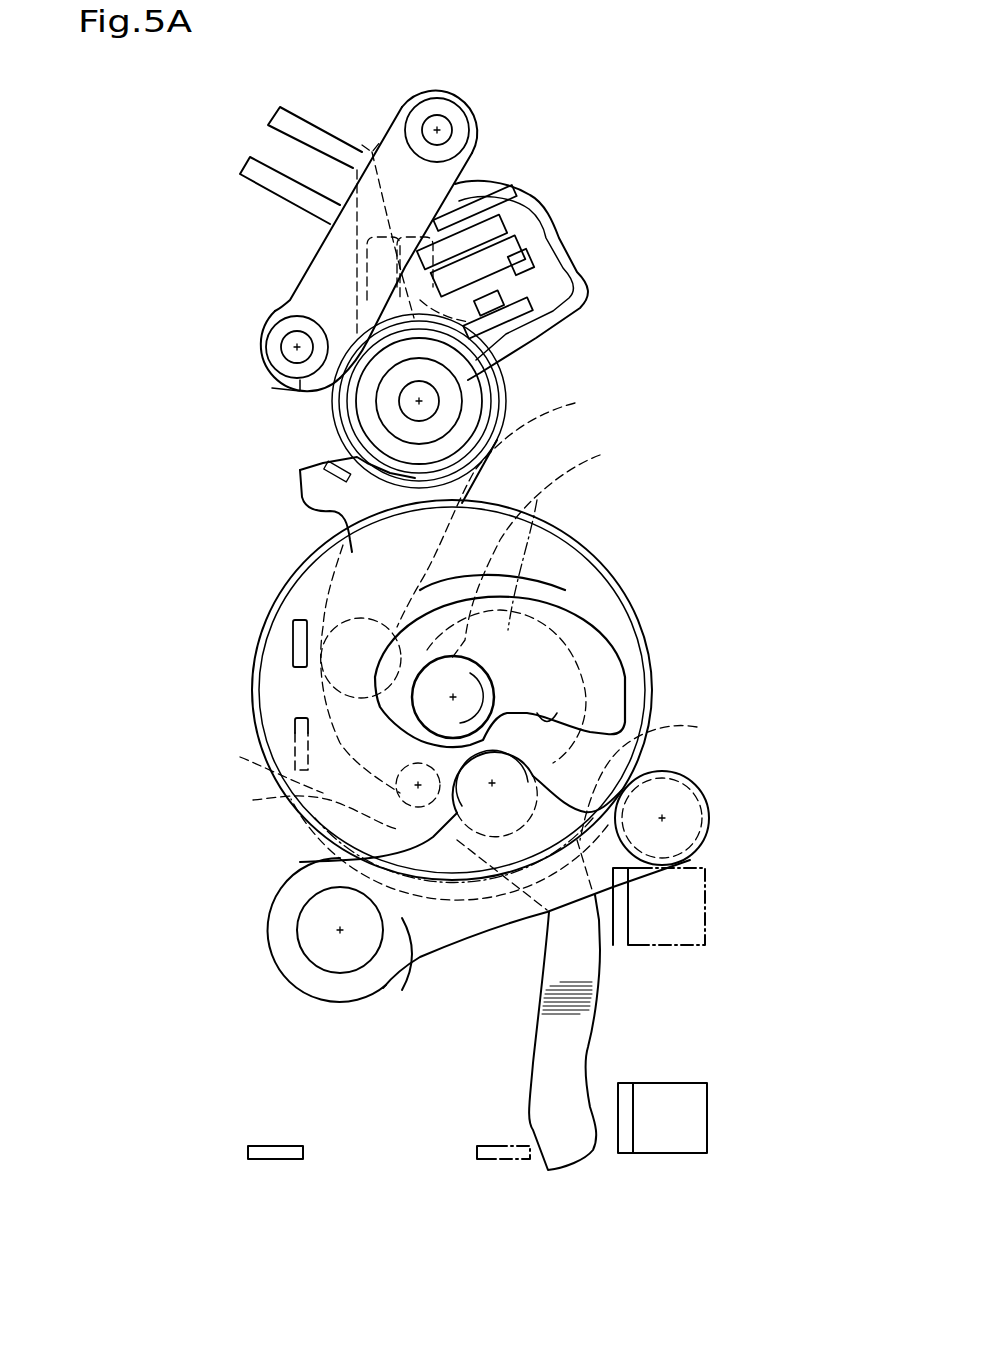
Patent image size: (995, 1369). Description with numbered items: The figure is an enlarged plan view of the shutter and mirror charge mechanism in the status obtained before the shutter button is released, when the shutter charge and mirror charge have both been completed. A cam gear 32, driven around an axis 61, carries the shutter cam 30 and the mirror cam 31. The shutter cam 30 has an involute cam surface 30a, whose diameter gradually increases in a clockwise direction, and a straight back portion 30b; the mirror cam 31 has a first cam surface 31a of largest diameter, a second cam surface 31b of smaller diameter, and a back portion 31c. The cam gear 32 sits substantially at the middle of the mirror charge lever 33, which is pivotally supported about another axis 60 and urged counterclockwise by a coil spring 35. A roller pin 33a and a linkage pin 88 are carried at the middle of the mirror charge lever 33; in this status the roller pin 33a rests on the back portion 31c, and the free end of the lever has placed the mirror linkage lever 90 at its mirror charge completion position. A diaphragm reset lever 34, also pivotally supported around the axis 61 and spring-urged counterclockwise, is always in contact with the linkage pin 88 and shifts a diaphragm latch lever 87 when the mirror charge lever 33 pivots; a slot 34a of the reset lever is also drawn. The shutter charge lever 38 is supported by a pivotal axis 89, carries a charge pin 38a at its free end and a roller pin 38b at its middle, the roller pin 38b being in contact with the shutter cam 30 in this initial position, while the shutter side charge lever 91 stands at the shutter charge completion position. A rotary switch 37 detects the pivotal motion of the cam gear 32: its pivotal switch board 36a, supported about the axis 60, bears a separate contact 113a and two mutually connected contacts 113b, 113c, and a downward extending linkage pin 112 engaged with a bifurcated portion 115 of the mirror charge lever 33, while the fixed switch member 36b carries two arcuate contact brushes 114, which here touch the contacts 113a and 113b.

The shutter cam 30 is at (602, 615).
The involute cam surface 30a is at (560, 587).
The straight back portion 30b is at (550, 714).
The mirror cam 31 is at (578, 456).
The first cam surface 31a is at (600, 648).
The second cam surface 31b is at (603, 808).
The back portion 31c is at (578, 405).
The cam gear 32 is at (562, 532).
The mirror charge lever 33 is at (578, 1037).
The roller pin 33a is at (278, 590).
The diaphragm reset lever 34 is at (293, 800).
The slot edge 34a is at (293, 790).
The coil spring 35 is at (345, 417).
The pivotal switch board 36a is at (540, 225).
The fixed switch member 36b is at (328, 252).
The rotary switch 37 is at (337, 120).
The shutter charge lever 38 is at (450, 937).
The charge pin 38a is at (690, 807).
The roller pin 38b is at (490, 738).
The axis 60 is at (432, 398).
The axis 61 is at (460, 660).
The diaphragm latch lever 87 is at (295, 640).
The linkage pin 88 is at (395, 805).
The pivotal axis 89 is at (305, 927).
The mirror linkage lever 90 is at (270, 1157).
The shutter side charge lever 91 is at (698, 920).
The linkage pin 112 is at (373, 150).
The separate contact 113a is at (540, 278).
The contact 113b is at (495, 318).
The contact 113c is at (500, 232).
The arcuate contact brushes 114 is at (478, 265).
The bifurcated portion 115 is at (373, 280).